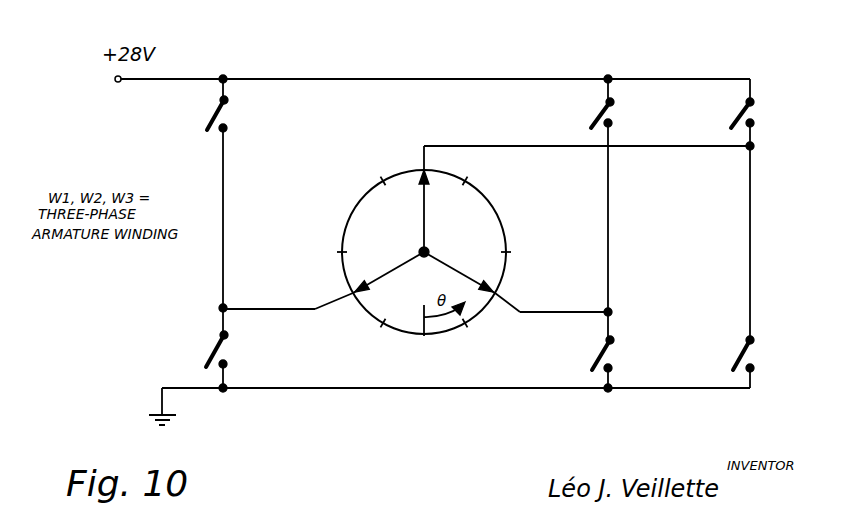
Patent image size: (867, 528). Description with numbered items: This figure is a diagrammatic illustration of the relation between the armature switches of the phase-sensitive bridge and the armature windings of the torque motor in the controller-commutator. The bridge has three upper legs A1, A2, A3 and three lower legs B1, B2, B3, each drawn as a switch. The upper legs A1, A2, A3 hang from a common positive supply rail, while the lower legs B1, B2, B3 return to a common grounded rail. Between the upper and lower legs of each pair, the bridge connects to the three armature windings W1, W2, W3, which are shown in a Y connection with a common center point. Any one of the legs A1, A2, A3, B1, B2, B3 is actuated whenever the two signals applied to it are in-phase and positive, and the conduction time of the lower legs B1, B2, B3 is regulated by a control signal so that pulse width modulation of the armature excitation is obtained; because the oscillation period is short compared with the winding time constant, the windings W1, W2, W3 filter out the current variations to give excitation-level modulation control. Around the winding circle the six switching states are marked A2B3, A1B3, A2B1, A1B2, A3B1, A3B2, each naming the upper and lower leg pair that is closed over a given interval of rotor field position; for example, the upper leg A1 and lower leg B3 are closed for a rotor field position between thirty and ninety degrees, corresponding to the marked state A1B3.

The upper leg A1 is at (201, 114).
The upper leg A2 is at (619, 113).
The upper leg A3 is at (760, 113).
The lower leg B1 is at (192, 349).
The lower leg B2 is at (616, 354).
The lower leg B3 is at (758, 354).
The armature winding W1 is at (325, 278).
The armature winding W2 is at (515, 280).
The armature winding W3 is at (408, 199).
The commutation point A2B3 is at (375, 166).
The commutation point A1B3 is at (494, 170).
The commutation point A2B1 is at (312, 264).
The commutation point A1B2 is at (530, 264).
The commutation point A3B1 is at (368, 337).
The commutation point A3B2 is at (475, 337).